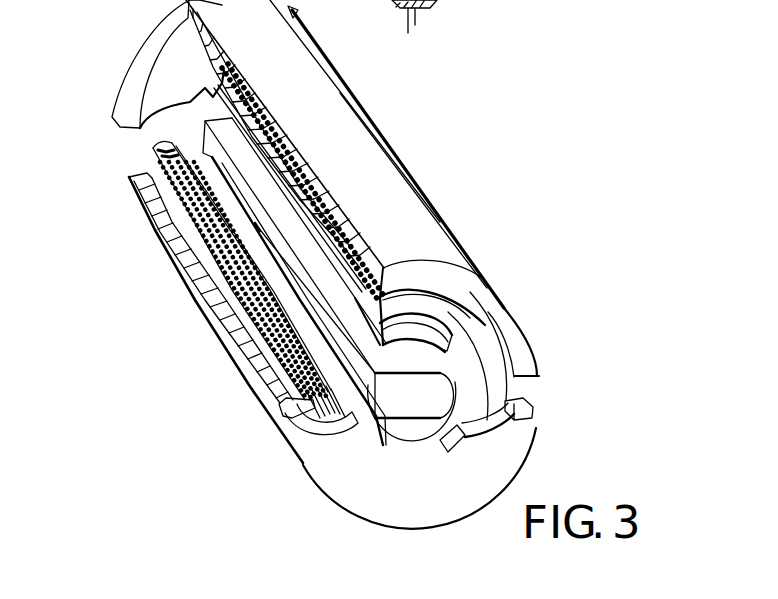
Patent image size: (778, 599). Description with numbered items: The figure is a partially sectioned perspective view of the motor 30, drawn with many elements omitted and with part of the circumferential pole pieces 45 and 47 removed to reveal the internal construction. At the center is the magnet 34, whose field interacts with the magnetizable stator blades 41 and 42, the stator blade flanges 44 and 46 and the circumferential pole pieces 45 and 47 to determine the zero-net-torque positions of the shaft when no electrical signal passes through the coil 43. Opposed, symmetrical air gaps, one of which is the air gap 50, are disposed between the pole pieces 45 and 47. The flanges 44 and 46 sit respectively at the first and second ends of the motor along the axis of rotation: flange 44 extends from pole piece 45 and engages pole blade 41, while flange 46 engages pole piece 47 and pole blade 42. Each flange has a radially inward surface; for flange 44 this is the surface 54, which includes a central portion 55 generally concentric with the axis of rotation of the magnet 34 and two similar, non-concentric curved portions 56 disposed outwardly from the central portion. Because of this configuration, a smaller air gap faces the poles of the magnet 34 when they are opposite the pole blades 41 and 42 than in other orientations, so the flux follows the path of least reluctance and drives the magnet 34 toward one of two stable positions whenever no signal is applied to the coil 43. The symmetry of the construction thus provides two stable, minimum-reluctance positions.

The motor 30 is at (495, 125).
The magnet 34 is at (417, 428).
The stator blade 41 is at (384, 440).
The stator blade 42 is at (440, 332).
The coil 43 is at (437, 307).
The stator blade flange 44 is at (437, 498).
The circumferential pole piece 45 is at (282, 418).
The stator blade flange 46 is at (178, 50).
The circumferential pole piece 47 is at (326, 98).
The air gap 50 is at (549, 381).
The radially inward surface 54 is at (512, 420).
The central portion 55 is at (418, 428).
The curved portion 56 is at (487, 422).